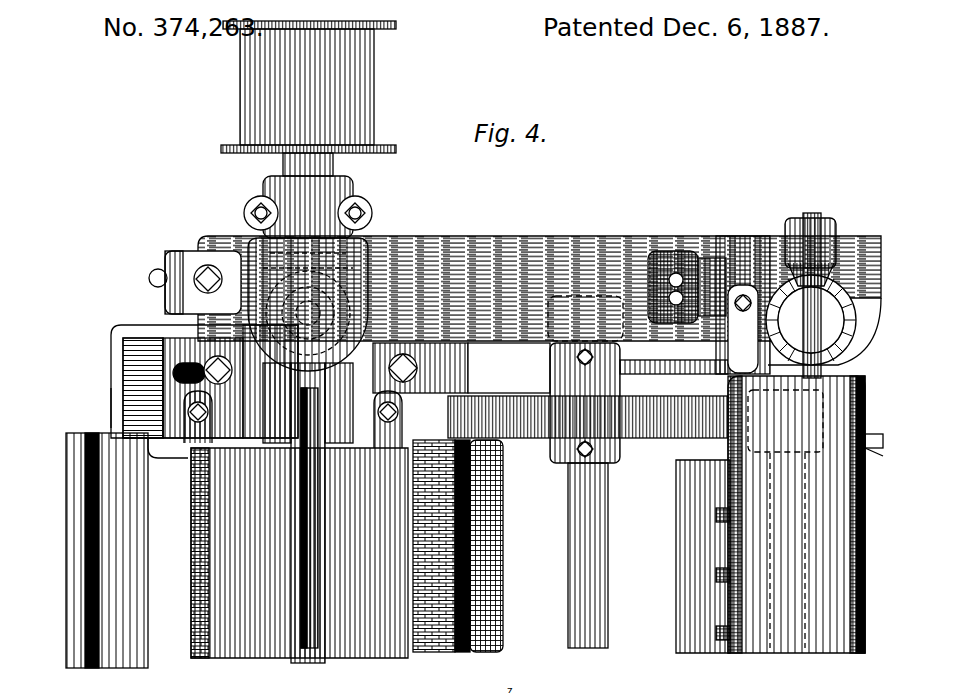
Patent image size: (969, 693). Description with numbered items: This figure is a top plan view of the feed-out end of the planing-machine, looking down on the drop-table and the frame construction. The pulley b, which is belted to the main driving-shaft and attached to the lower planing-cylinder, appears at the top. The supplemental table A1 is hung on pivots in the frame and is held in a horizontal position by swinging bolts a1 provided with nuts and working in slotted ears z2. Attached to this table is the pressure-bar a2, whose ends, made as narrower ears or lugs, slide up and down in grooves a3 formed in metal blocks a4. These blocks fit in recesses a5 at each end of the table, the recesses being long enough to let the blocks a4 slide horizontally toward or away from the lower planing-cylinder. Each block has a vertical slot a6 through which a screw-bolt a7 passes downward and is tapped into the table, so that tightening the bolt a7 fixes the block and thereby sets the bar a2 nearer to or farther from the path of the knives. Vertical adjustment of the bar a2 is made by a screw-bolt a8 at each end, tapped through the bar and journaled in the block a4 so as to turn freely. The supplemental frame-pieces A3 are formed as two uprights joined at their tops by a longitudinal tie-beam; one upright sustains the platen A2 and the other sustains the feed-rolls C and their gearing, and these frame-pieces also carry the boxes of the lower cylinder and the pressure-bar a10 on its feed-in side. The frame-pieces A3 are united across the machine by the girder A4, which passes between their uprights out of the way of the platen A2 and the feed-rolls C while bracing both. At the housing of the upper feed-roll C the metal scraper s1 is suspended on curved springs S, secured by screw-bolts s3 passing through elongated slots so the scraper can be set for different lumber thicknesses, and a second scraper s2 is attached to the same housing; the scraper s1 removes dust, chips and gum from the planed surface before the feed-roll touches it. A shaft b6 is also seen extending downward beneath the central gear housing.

The pulley b is at (366, 69).
The supplemental frame-pieces A3 is at (574, 229).
The slotted ears z2 is at (167, 239).
The swinging bolts a1 is at (144, 254).
The screw-bolt a7 is at (173, 335).
The recesses a5 is at (135, 332).
The metal blocks a4 is at (159, 369).
The slot a6 is at (128, 398).
The screw-bolt a8 is at (208, 399).
The girder A4 is at (480, 358).
The pressure-bar a10 is at (470, 382).
The feed-rolls C is at (668, 522).
The curved springs S is at (870, 428).
The screw-bolts s3 is at (872, 458).
The scraper s2 is at (720, 643).
The scraper s1 is at (844, 648).
The supplemental table A1 is at (96, 662).
The grooves a3 is at (155, 444).
The platen A2 is at (240, 650).
The pressure-bar a2 is at (182, 502).
The shaft b6 is at (300, 648).